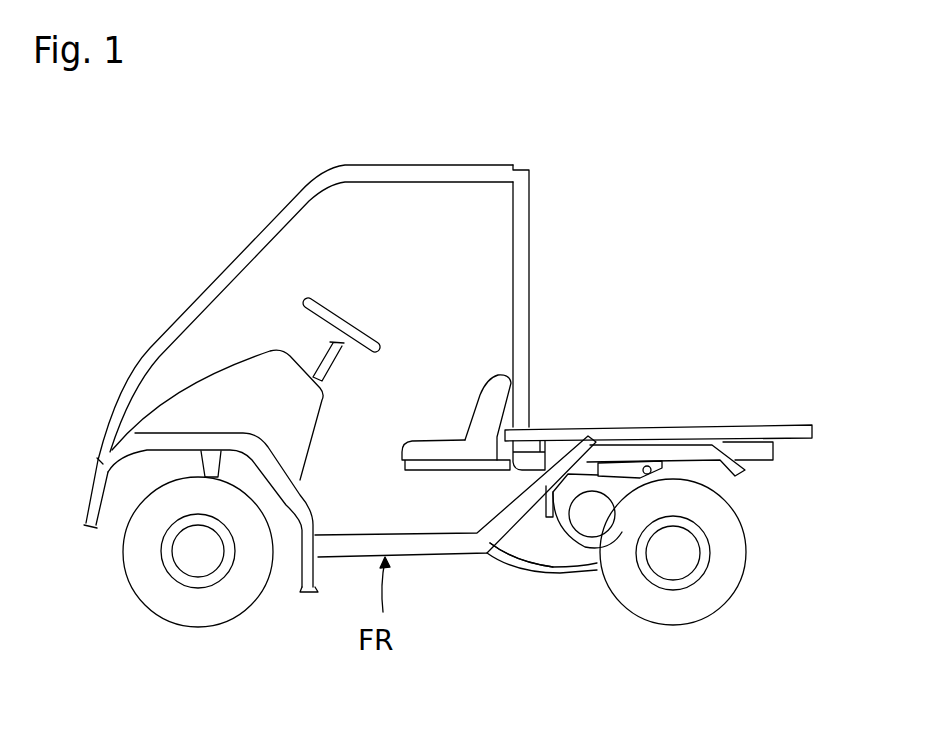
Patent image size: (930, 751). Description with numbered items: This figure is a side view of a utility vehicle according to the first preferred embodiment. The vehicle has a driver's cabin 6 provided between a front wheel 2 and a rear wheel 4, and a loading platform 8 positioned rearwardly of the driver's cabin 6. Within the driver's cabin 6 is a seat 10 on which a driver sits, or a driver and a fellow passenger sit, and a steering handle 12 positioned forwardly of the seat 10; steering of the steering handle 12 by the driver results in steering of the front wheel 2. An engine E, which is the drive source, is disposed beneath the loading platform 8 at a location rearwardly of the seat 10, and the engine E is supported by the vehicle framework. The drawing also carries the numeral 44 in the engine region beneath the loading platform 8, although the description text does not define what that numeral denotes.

The front wheel 2 is at (160, 607).
The rear wheel 4 is at (685, 615).
The driver's cabin 6 is at (457, 270).
The loading platform 8 is at (770, 425).
The seat 10 is at (437, 447).
The steering handle 12 is at (325, 297).
The engine 44 is at (587, 513).
The engine E is at (547, 532).